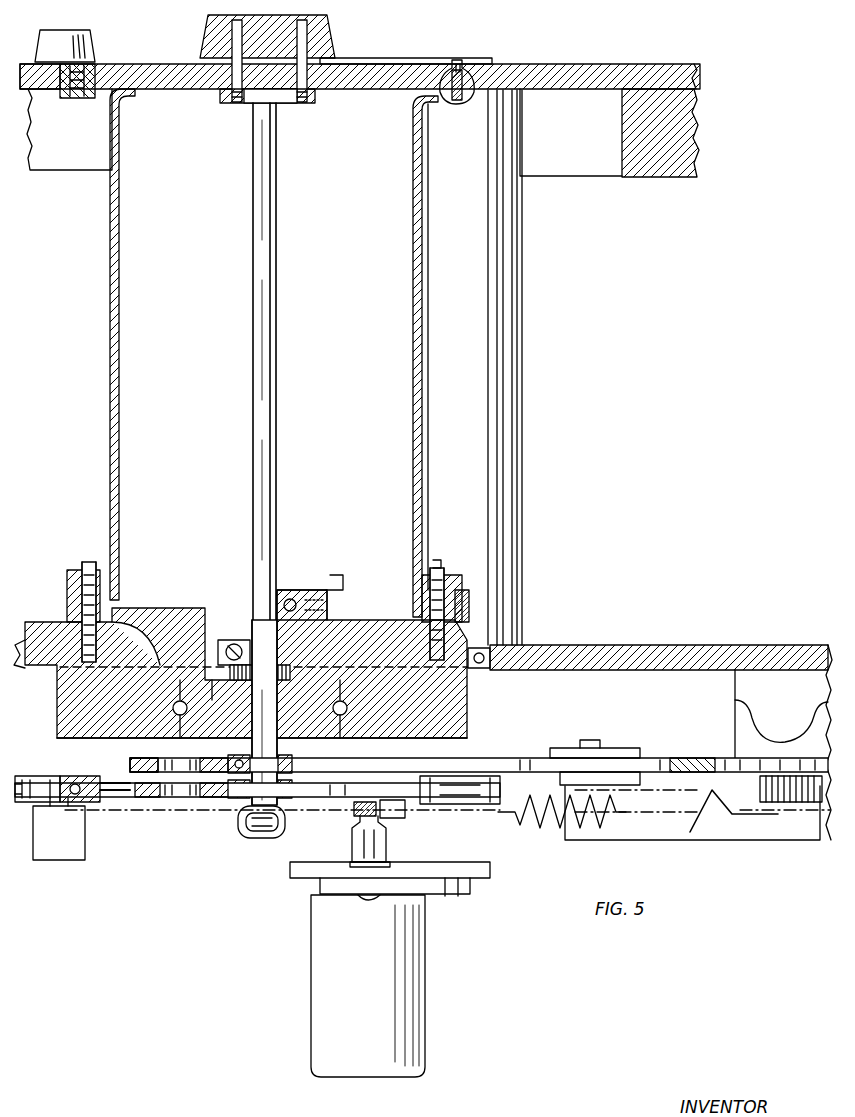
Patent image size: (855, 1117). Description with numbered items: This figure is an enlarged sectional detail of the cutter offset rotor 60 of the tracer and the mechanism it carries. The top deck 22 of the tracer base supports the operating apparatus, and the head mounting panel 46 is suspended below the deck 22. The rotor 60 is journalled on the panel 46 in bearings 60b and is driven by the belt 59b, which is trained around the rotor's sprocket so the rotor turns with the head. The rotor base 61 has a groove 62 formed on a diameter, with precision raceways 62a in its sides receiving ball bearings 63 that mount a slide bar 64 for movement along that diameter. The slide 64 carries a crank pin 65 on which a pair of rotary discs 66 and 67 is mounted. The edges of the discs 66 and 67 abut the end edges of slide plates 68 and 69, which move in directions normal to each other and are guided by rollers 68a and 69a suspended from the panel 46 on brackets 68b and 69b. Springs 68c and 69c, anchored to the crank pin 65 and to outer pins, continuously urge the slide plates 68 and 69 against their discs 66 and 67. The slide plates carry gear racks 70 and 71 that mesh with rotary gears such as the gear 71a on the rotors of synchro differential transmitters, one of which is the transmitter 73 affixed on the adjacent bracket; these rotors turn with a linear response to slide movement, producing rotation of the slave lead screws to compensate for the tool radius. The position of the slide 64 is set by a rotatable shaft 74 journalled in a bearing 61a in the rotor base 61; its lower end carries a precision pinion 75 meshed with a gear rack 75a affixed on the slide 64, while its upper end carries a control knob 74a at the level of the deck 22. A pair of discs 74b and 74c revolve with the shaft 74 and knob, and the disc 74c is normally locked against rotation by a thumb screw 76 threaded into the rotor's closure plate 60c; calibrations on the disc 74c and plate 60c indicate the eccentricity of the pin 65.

The top deck 22 is at (383, 116).
The head mounting panel 46 is at (610, 662).
The belt 59b is at (472, 607).
The cutter offset rotor 60 is at (420, 380).
The bearings 60b is at (490, 670).
The closure plate 60c is at (142, 82).
The rotor base 61 is at (372, 740).
The bearing 61a is at (285, 592).
The groove 62 is at (348, 692).
The precision raceways 62a is at (346, 716).
The ball bearings 63 is at (332, 710).
The slide bar 64 is at (172, 706).
The crank pin 65 is at (256, 750).
The rotary disc 66 is at (134, 762).
The rotary disc 67 is at (144, 798).
The slide plate 68 is at (690, 758).
The rollers 68a is at (622, 756).
The bracket 68b is at (778, 838).
The spring 68c is at (562, 826).
The slide plate 69 is at (110, 798).
The rollers 69a is at (24, 804).
The bracket 69b is at (70, 852).
The spring 69c is at (244, 828).
The gear rack 70 is at (786, 776).
The gear rack 71 is at (386, 820).
The rotary gear 71a is at (358, 814).
The synchro differential transmitter 73 is at (408, 996).
The rotatable shaft 74 is at (274, 366).
The control knob 74a is at (332, 42).
The disc 74b is at (408, 58).
The disc 74c is at (458, 58).
The precision pinion 75 is at (300, 662).
The gear rack 75a is at (206, 656).
The thumb screw 76 is at (95, 48).